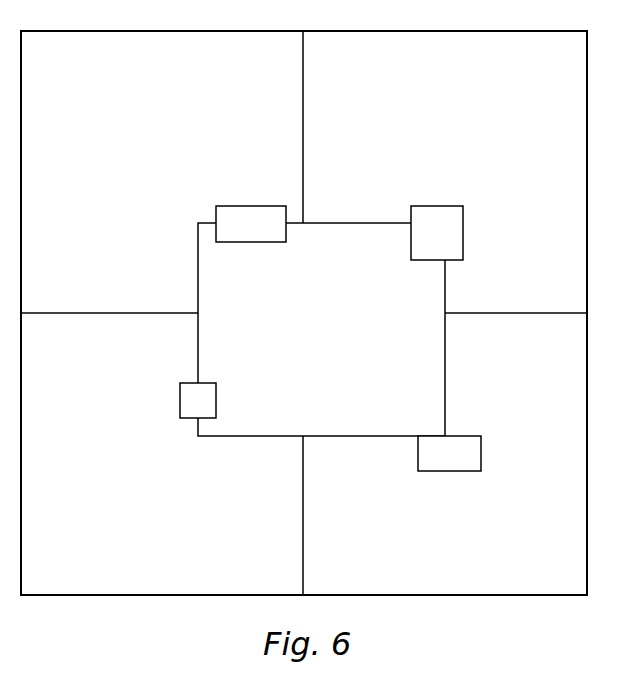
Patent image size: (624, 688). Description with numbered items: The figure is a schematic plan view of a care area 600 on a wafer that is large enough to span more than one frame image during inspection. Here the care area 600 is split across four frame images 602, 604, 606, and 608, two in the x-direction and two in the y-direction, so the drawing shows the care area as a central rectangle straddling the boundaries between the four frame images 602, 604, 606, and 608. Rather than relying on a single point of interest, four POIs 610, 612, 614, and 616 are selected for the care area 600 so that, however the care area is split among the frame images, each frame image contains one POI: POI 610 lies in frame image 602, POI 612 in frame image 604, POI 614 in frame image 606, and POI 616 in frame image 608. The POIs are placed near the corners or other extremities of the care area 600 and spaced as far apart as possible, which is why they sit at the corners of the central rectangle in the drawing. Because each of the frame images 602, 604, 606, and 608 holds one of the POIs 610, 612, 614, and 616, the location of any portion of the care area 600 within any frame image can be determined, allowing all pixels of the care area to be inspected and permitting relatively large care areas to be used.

The care area 600 is at (359, 329).
The frame image 602 is at (176, 128).
The frame image 604 is at (486, 128).
The frame image 606 is at (464, 520).
The frame image 608 is at (164, 496).
The POI 610 is at (211, 216).
The POI 612 is at (474, 226).
The POI 614 is at (487, 447).
The POI 616 is at (158, 398).